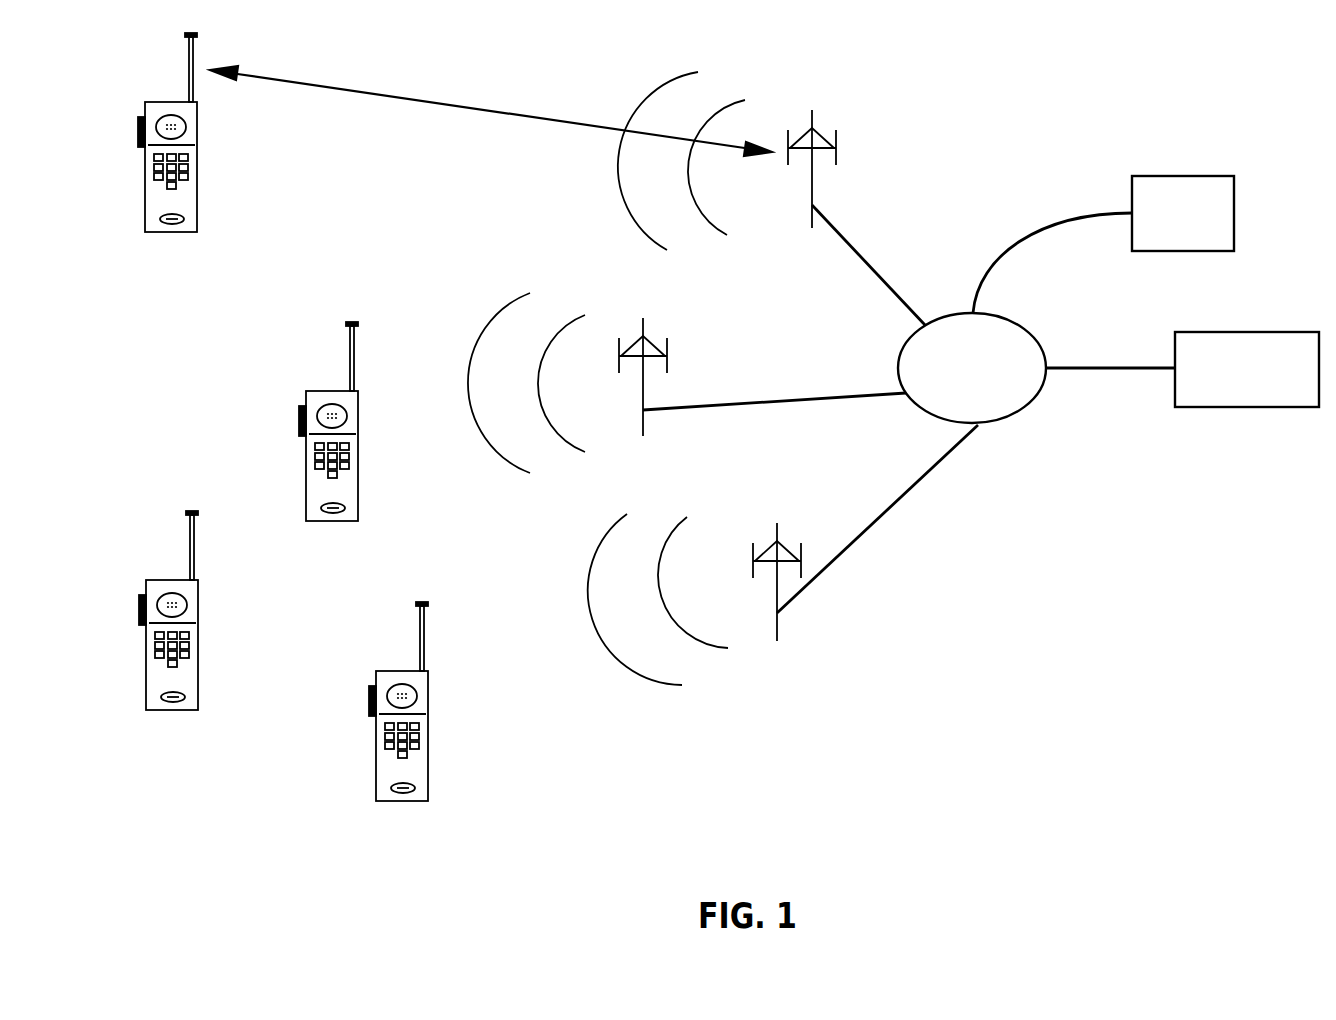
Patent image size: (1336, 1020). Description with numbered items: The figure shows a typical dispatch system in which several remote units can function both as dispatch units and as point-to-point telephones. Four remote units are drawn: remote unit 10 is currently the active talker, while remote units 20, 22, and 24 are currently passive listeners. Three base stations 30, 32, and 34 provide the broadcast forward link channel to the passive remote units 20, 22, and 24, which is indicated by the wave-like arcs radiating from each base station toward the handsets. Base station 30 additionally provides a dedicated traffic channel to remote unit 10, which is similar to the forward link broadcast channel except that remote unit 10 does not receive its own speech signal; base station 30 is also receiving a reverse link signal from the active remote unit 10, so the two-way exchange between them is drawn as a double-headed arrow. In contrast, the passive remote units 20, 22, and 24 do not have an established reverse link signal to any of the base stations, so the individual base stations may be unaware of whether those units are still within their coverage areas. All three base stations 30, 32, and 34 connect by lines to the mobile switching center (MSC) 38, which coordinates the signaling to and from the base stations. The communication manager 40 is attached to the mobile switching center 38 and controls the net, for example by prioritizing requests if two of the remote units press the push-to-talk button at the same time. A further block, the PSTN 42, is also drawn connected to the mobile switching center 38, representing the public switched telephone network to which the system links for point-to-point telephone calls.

The remote unit 10 is at (199, 142).
The remote unit 20 is at (360, 428).
The remote unit 22 is at (200, 619).
The remote unit 24 is at (430, 706).
The base station 30 is at (824, 137).
The base station 32 is at (655, 345).
The base station 34 is at (789, 550).
The mobile switching center (MSC) 38 is at (1043, 342).
The communication manager 40 is at (1276, 332).
The public switched telephone network (PSTN) 42 is at (1192, 176).